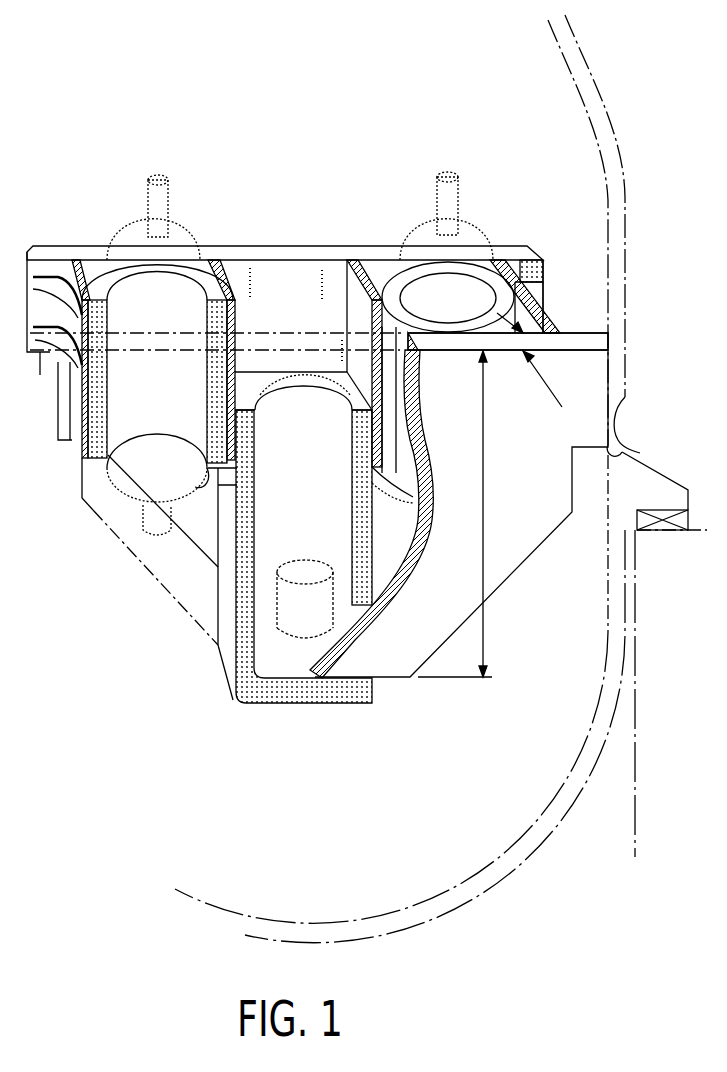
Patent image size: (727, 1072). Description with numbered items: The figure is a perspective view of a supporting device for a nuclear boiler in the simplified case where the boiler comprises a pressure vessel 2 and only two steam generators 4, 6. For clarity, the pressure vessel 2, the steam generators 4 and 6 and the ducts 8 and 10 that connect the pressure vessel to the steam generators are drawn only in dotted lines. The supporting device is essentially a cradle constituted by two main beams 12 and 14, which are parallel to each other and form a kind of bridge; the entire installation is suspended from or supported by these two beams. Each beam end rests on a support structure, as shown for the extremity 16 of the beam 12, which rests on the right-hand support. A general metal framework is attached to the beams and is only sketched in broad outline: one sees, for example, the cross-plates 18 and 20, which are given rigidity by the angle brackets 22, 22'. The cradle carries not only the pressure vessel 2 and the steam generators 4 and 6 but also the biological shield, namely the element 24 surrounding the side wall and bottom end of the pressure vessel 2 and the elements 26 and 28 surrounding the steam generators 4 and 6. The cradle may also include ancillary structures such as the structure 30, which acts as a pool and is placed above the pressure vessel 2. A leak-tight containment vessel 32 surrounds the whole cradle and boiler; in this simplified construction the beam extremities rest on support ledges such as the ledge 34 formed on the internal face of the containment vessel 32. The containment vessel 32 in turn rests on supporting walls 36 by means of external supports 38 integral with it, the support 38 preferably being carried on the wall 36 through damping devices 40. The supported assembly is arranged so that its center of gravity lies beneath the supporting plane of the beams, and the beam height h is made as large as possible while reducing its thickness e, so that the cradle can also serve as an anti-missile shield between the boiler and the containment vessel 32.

The pressure vessel 2 is at (260, 372).
The steam generator 4 is at (184, 228).
The steam generator 6 is at (417, 243).
The duct 8 is at (192, 447).
The duct 10 is at (358, 498).
The main beam 12 is at (593, 333).
The main beam 14 is at (505, 252).
The extremity of the beam 16 is at (623, 423).
The cross-plate 18 is at (546, 268).
The cross-plate 20 is at (88, 296).
The angle bracket 22 is at (53, 248).
The angle bracket 22' is at (53, 403).
The biological shield element 24 is at (233, 697).
The biological shield element 26 is at (85, 498).
The biological shield element 28 is at (390, 297).
The pool structure 30 is at (275, 278).
The containment vessel 32 is at (603, 87).
The support ledge 34 is at (588, 522).
The supporting wall 36 is at (633, 823).
The external support 38 is at (658, 487).
The damping device 40 is at (670, 530).
The height of the beam h is at (455, 514).
The thickness of the beam e is at (532, 360).